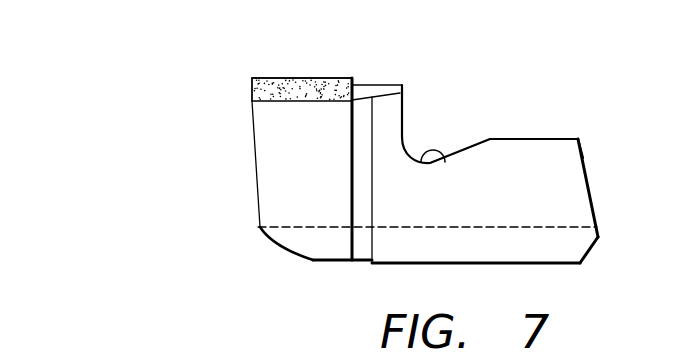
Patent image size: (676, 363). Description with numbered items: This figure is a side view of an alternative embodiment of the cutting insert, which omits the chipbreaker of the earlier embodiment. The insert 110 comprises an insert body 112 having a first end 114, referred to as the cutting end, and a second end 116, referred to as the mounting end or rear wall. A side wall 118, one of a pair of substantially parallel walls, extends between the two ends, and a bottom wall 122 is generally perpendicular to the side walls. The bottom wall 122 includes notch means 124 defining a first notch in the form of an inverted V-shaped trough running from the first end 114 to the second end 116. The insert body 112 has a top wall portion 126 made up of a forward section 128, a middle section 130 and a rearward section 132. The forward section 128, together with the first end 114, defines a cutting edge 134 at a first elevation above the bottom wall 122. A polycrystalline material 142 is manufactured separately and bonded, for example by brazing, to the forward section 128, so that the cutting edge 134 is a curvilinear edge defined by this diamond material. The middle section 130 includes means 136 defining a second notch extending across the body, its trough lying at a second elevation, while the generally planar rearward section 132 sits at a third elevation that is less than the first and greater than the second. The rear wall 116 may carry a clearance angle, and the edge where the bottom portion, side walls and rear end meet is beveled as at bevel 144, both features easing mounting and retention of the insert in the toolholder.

The insert 110 is at (230, 118).
The insert body 112 is at (568, 267).
The first end 114 is at (252, 140).
The second end 116 is at (587, 167).
The wall 118 is at (545, 211).
The bottom wall 122 is at (320, 262).
The notch means 124 is at (258, 227).
The top wall portion 126 is at (538, 135).
The forward section 128 is at (337, 90).
The middle section 130 is at (468, 152).
The rearward section 132 is at (565, 133).
The cutting edge 134 is at (252, 83).
The second notch means 136 is at (445, 162).
The polycrystalline material 142 is at (295, 85).
The bevel 144 is at (590, 245).